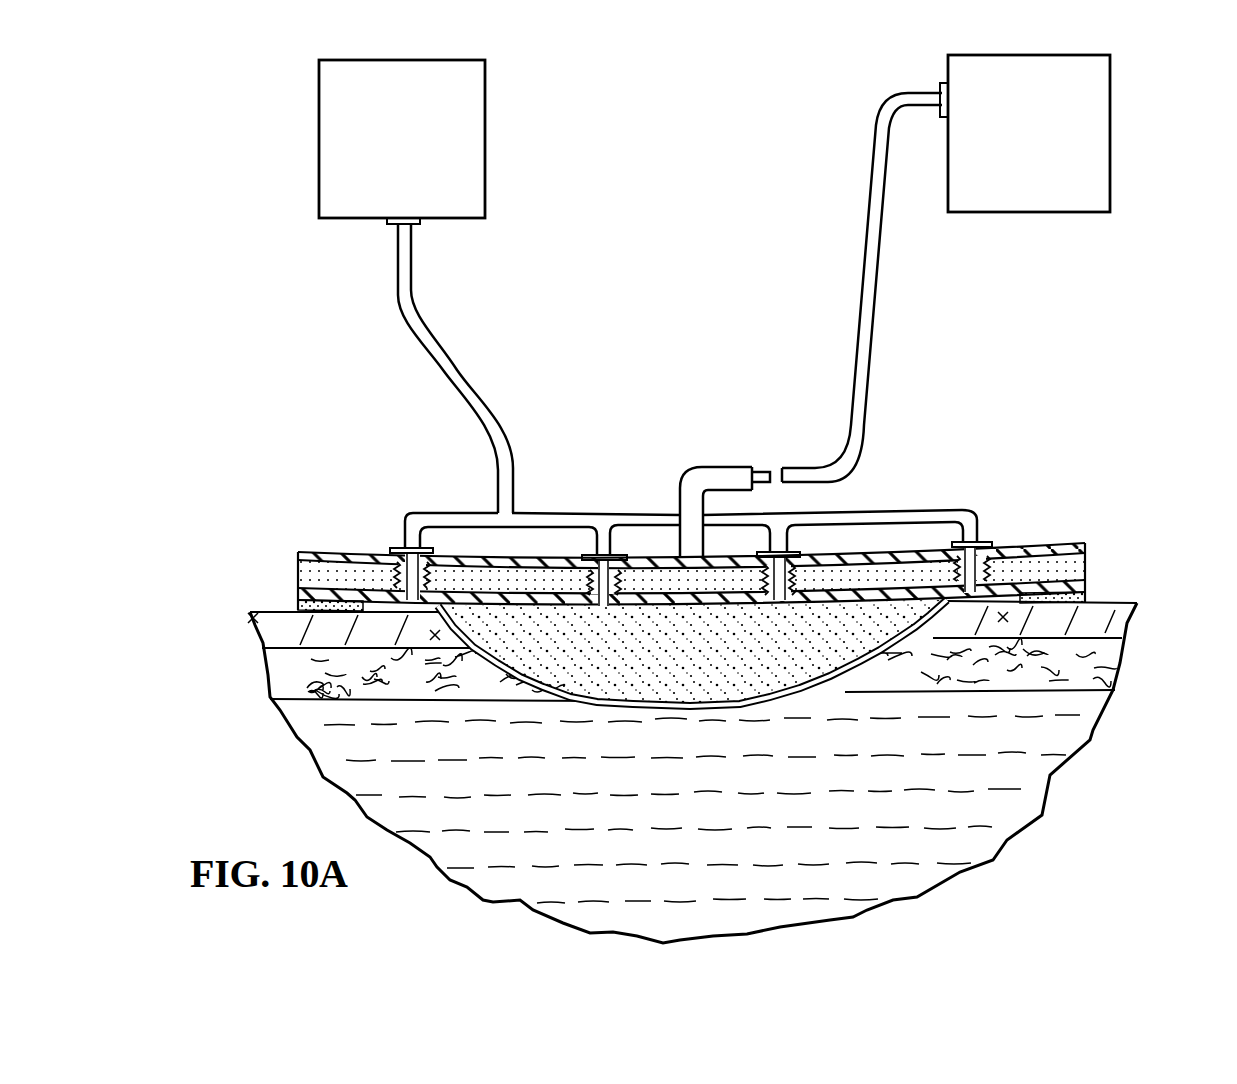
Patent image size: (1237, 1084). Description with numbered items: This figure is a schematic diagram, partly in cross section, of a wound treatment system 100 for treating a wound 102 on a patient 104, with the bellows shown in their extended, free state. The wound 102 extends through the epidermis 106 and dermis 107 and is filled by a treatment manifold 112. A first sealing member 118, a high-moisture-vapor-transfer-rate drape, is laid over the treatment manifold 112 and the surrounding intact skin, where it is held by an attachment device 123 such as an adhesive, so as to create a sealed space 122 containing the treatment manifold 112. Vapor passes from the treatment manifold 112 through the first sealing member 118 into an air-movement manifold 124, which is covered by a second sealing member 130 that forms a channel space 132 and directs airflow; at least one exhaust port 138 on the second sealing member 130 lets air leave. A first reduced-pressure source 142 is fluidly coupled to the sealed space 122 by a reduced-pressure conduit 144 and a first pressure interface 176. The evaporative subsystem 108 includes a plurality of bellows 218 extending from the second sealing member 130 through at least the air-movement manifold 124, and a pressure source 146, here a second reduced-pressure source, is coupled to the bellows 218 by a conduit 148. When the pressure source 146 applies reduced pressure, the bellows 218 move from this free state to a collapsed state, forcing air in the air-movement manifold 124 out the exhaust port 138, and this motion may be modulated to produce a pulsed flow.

The wound treatment system 100 is at (719, 499).
The wound 102 is at (800, 700).
The patient 104 is at (1046, 796).
The epidermis 106 is at (280, 610).
The dermis 107 is at (1120, 667).
The evaporative subsystem 108 is at (581, 510).
The treatment manifold 112 is at (715, 667).
The first sealing member 118 is at (1090, 590).
The sealed space 122 is at (963, 643).
The attachment device 123 is at (1137, 603).
The air-movement manifold 124 is at (1072, 563).
The second sealing member 130 is at (1035, 543).
The channel space 132 is at (336, 552).
The exhaust port 138 is at (296, 567).
The reduced-pressure source 142 is at (1113, 132).
The reduced-pressure conduit 144 is at (878, 290).
The pressure source 146 is at (319, 141).
The conduit 148 is at (397, 258).
The first pressure interface 176 is at (730, 466).
The bellows 218 is at (394, 547).